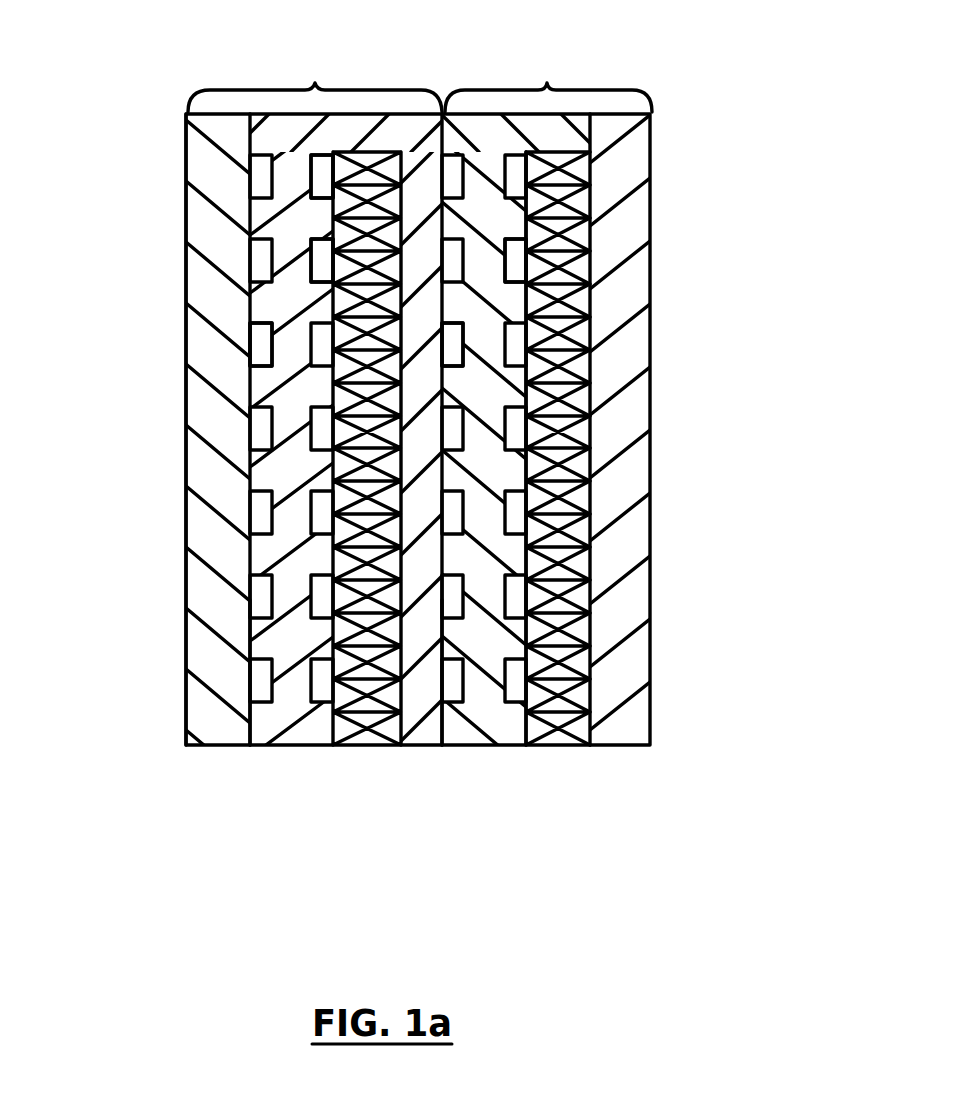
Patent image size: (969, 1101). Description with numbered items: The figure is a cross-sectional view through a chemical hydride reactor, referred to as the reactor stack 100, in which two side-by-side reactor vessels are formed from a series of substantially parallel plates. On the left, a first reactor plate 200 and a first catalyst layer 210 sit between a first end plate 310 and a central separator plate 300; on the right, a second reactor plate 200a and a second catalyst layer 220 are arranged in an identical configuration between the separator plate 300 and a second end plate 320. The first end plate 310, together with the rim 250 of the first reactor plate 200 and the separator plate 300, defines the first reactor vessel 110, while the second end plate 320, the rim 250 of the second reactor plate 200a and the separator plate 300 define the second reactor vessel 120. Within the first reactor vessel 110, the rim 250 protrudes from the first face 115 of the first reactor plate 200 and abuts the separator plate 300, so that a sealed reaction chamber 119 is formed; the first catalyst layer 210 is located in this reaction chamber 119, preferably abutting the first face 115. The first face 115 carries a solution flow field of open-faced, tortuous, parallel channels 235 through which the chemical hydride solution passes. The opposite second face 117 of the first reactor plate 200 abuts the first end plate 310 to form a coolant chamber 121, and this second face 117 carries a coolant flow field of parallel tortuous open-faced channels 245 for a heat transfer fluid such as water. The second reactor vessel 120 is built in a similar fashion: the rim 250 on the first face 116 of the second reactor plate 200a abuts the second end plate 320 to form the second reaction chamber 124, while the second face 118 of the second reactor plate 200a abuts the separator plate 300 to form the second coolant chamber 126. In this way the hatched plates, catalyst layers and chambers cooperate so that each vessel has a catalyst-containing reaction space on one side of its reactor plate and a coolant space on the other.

The reactor stack 100 is at (676, 803).
The first reactor vessel 110 is at (315, 82).
The second reactor vessel 120 is at (547, 82).
The first face 115 is at (354, 650).
The first face 116 is at (526, 700).
The second face 117 is at (247, 657).
The second face 118 is at (438, 640).
The reaction chamber 119 is at (313, 159).
The coolant chamber 121 is at (250, 184).
The second reaction chamber 124 is at (578, 268).
The second coolant chamber 126 is at (458, 347).
The first reactor plate 200 is at (303, 732).
The second reactor plate 200a is at (497, 733).
The first catalyst layer 210 is at (358, 148).
The second catalyst layer 220 is at (572, 167).
The channels 235 is at (318, 258).
The channels 245 is at (250, 350).
The rim 250 is at (363, 128).
The separator plate 300 is at (413, 737).
The first end plate 310 is at (197, 627).
The second end plate 320 is at (635, 572).